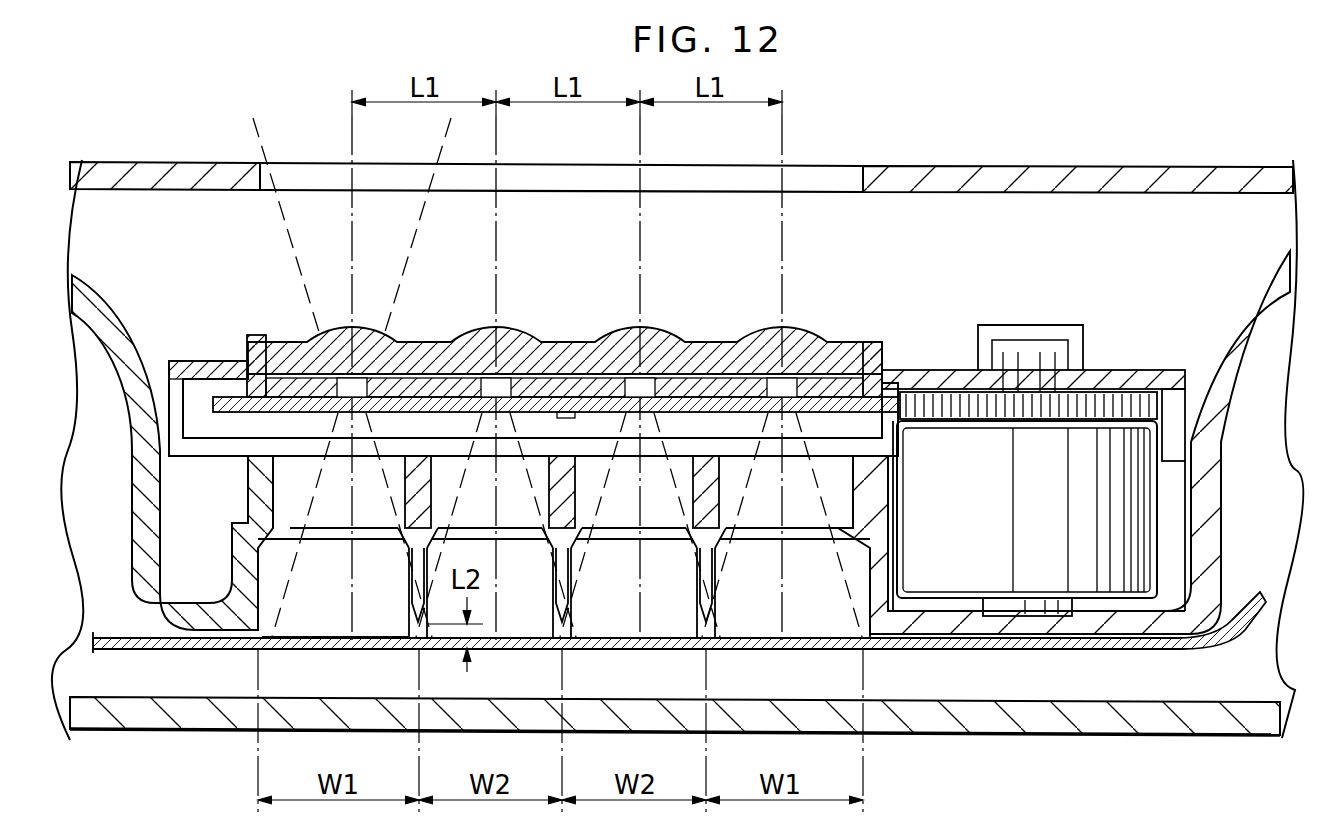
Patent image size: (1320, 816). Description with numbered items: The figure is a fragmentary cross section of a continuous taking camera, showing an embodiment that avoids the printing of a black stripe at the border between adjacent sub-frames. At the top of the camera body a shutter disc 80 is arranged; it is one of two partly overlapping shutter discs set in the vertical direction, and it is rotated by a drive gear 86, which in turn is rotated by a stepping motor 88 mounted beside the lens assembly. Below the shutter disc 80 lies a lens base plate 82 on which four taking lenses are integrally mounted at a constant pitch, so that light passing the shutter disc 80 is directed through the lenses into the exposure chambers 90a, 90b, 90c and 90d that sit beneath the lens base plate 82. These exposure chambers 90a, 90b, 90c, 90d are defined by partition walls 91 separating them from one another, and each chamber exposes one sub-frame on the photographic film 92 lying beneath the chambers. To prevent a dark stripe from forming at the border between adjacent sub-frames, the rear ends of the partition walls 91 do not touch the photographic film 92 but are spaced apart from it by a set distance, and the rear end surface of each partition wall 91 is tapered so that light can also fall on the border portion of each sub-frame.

The shutter disc 80 is at (228, 396).
The lens base plate 82 is at (838, 344).
The drive gear 86 is at (1110, 396).
The stepping motor 88 is at (952, 457).
The exposure chamber 90a is at (265, 604).
The exposure chamber 90b is at (553, 588).
The exposure chamber 90c is at (692, 586).
The exposure chamber 90d is at (726, 589).
The partition wall 91 is at (410, 598).
The photographic film 92 is at (912, 650).